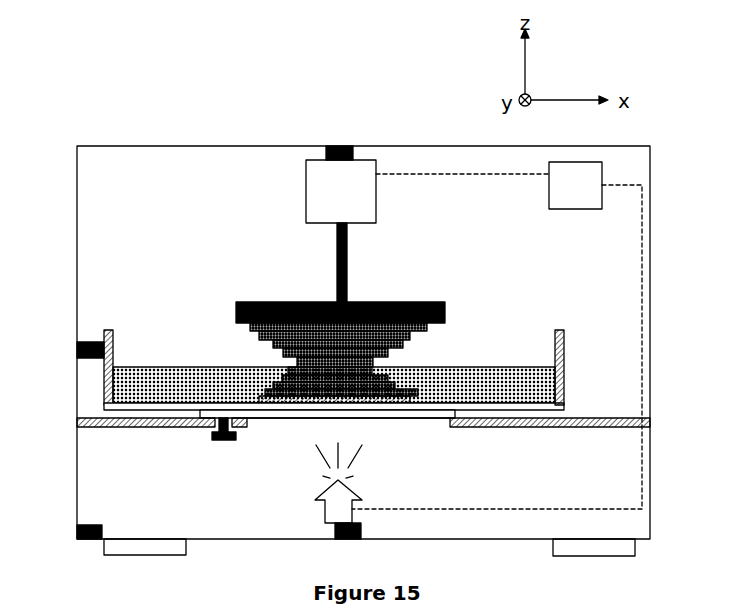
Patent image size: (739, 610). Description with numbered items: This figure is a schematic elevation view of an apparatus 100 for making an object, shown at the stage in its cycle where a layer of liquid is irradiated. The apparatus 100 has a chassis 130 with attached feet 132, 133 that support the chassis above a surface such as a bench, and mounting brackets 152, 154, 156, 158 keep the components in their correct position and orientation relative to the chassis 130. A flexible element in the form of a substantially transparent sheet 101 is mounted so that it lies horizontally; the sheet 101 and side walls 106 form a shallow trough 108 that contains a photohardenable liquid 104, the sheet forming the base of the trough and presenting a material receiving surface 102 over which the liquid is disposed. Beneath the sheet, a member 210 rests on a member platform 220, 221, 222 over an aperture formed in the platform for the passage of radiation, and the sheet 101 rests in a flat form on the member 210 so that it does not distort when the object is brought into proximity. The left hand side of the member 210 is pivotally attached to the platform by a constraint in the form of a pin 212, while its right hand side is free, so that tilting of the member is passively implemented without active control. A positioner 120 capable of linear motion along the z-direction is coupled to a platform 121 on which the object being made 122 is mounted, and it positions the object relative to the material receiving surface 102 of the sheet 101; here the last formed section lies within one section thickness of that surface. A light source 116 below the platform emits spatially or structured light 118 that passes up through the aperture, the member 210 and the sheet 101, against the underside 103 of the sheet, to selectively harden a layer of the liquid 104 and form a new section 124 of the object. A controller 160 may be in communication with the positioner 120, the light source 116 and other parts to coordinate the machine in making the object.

The apparatus 100 is at (446, 84).
The sheet 101 is at (105, 407).
The material receiving surface 102 is at (108, 330).
The underside 103 is at (190, 412).
The photohardenable liquid 104 is at (510, 387).
The side walls 106 is at (554, 334).
The trough 108 is at (90, 377).
The light source 116 is at (352, 511).
The light 118 is at (322, 480).
The positioner 120 is at (378, 206).
The platform 121 is at (250, 302).
The object being made 122 is at (290, 358).
The section 124 is at (400, 404).
The chassis 130 is at (247, 146).
The foot 132 is at (186, 548).
The foot 133 is at (553, 550).
The mounting bracket 152 is at (80, 342).
The mounting bracket 154 is at (340, 146).
The mounting bracket 156 is at (78, 532).
The mounting bracket 158 is at (362, 530).
The controller 160 is at (590, 195).
The member 210 is at (380, 420).
The pin 212 is at (225, 440).
The member platform 220 is at (85, 428).
The member platform 221 is at (255, 427).
The member platform 222 is at (542, 427).